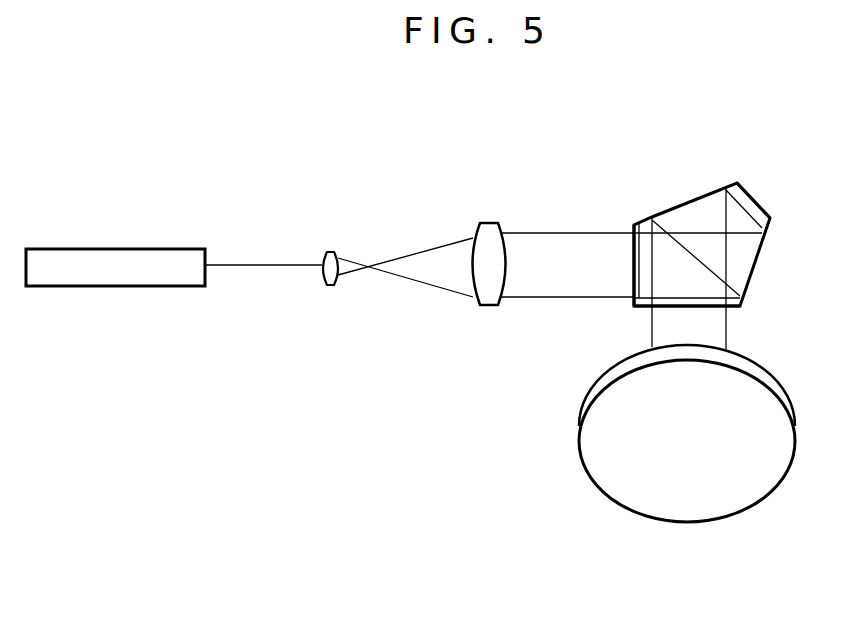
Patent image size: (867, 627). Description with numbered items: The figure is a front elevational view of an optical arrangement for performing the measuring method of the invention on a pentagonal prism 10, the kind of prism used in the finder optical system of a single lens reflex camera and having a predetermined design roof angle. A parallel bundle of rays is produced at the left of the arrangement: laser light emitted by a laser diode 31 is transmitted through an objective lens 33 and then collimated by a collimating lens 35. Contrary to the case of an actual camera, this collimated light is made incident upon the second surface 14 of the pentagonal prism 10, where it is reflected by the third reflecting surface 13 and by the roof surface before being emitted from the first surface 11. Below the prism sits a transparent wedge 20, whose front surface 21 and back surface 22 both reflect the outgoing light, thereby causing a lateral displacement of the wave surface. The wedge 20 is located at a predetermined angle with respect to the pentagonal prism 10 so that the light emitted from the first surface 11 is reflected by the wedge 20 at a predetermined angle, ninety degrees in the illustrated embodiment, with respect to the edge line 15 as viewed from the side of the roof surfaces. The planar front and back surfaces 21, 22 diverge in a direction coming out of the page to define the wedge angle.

The pentagonal prism 10 is at (690, 213).
The first surface 11 is at (736, 308).
The third reflecting surface 13 is at (763, 242).
The second surface 14 is at (633, 259).
The edge line 15 is at (686, 200).
The transparent wedge 20 is at (701, 474).
The front surface 21 is at (767, 370).
The back surface 22 is at (770, 476).
The laser diode 31 is at (135, 259).
The objective lens 33 is at (330, 256).
The collimating lens 35 is at (489, 228).